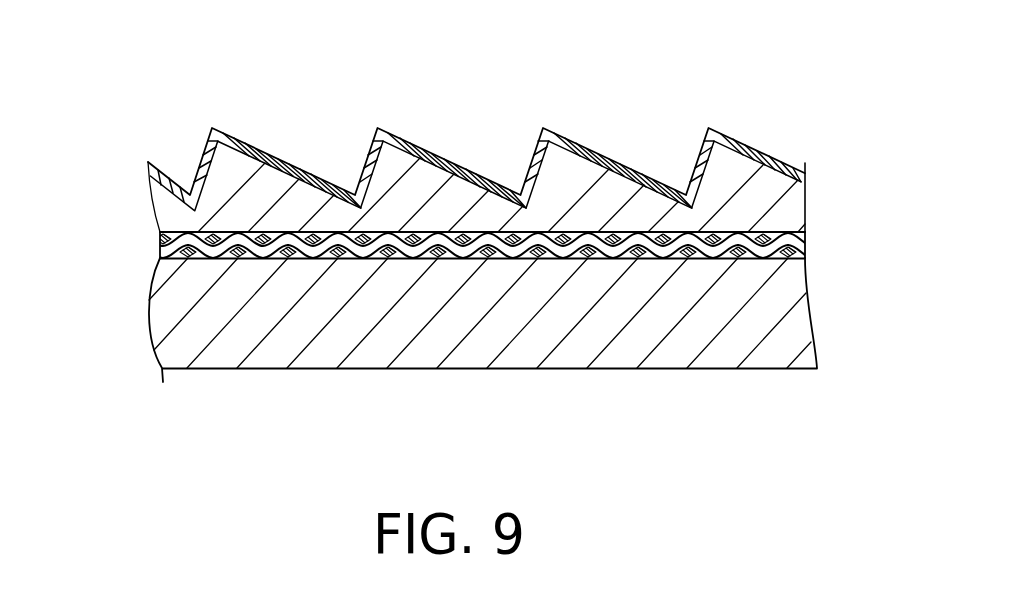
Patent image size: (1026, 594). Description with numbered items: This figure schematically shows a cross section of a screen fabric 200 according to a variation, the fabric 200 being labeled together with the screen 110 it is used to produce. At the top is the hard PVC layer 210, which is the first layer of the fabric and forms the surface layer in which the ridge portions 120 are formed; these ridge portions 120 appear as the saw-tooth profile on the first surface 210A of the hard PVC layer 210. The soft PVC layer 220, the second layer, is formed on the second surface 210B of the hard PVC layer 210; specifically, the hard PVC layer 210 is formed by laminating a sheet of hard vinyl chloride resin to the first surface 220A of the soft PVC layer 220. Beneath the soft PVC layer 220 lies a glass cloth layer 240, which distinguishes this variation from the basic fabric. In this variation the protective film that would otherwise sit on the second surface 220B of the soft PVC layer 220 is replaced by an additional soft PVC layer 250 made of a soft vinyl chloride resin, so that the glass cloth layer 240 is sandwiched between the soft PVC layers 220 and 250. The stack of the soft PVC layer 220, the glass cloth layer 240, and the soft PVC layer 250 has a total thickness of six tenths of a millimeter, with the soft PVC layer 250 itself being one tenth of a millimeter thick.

The screen fabric 200 is at (471, 221).
The optical pattern structure 110 is at (90, 92).
The ridge portions 120 is at (212, 124).
The hard PVC layer 210 is at (803, 167).
The first surface of the hard PVC layer 210A is at (738, 186).
The second surface of the hard PVC layer 210B is at (793, 160).
The soft PVC layer 220 is at (793, 207).
The first surface of the soft PVC layer 220A is at (700, 228).
The second surface of the soft PVC layer 220B is at (805, 195).
The glass cloth layer 240 is at (808, 240).
The soft PVC layer 250 is at (793, 303).